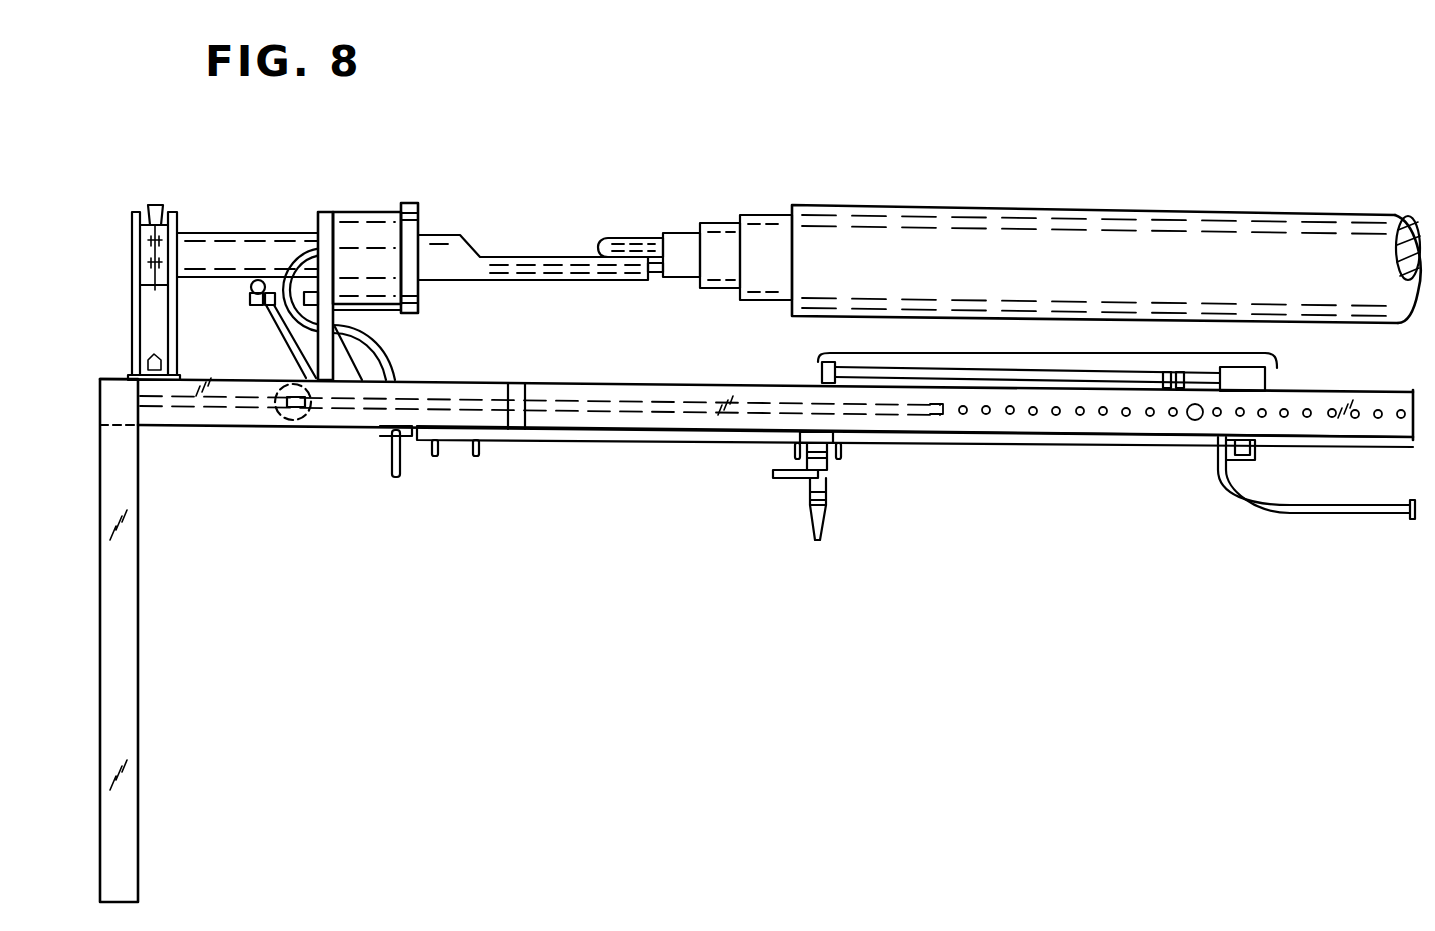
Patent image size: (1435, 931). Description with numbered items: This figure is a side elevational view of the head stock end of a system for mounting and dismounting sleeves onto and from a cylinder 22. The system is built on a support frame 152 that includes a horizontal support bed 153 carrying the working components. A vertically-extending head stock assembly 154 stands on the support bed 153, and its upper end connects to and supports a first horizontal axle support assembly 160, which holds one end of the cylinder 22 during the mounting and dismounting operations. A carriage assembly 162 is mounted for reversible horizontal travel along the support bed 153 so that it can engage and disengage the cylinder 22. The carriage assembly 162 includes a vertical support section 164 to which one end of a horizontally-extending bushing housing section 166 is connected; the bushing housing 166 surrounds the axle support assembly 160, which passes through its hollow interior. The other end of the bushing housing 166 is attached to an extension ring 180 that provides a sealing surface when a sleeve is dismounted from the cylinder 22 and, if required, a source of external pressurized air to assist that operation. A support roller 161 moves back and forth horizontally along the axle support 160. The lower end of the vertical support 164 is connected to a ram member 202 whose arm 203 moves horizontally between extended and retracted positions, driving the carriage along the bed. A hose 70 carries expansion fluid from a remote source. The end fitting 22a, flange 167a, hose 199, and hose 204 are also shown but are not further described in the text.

The cylinder 22 is at (985, 207).
The cylinder end fitting 22a is at (688, 233).
The hose 70 is at (906, 446).
The support frame 152 is at (138, 614).
The horizontal support bed 153 is at (280, 430).
The head stock assembly 154 is at (145, 190).
The first horizontal axle support assembly 160 is at (572, 282).
The support roller 161 is at (250, 286).
The carriage assembly 162 is at (340, 452).
The vertical support section 164 is at (310, 218).
The bushing housing section 166 is at (367, 212).
The flange 167a is at (418, 216).
The extension ring 180 is at (410, 202).
The hose 199 is at (1328, 520).
The ram member 202 is at (1057, 346).
The arm 203 is at (628, 410).
The hose 204 is at (400, 352).